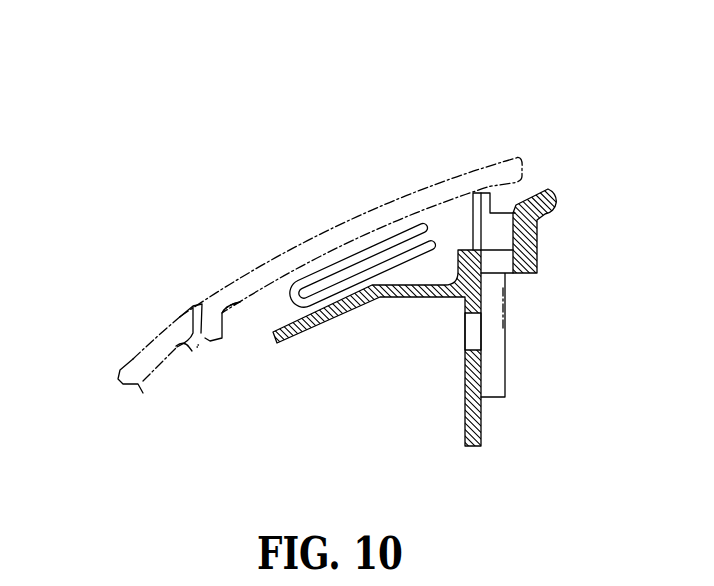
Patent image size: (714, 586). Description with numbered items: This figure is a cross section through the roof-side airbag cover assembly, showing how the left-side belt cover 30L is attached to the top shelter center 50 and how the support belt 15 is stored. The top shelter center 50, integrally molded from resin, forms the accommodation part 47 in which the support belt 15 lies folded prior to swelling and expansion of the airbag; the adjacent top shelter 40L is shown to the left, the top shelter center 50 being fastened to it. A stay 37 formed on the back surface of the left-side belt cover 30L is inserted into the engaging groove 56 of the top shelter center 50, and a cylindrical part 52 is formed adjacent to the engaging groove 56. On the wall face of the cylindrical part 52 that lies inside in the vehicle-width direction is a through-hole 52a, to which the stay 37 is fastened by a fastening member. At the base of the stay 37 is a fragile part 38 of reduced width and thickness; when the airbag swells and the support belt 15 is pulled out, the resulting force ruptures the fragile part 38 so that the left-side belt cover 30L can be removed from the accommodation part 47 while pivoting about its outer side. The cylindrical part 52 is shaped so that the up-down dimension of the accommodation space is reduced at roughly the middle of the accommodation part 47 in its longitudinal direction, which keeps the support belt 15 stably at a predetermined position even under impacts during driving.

The support belt 15 is at (347, 257).
The left-side belt cover 30L is at (438, 182).
The stay 37 is at (507, 377).
The fragile part 38 is at (518, 203).
The top shelter 40L is at (150, 333).
The accommodation part 47 is at (462, 205).
The top shelter center 50 is at (554, 184).
The cylindrical part 52 is at (314, 326).
The through-hole 52a is at (485, 342).
The engaging groove 56 is at (515, 284).